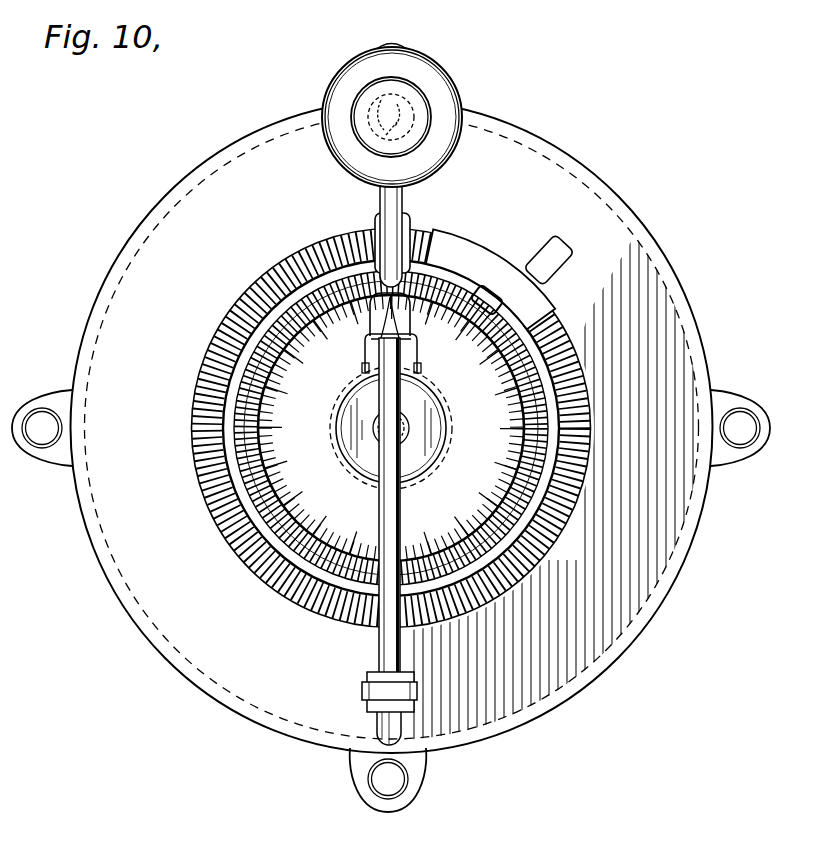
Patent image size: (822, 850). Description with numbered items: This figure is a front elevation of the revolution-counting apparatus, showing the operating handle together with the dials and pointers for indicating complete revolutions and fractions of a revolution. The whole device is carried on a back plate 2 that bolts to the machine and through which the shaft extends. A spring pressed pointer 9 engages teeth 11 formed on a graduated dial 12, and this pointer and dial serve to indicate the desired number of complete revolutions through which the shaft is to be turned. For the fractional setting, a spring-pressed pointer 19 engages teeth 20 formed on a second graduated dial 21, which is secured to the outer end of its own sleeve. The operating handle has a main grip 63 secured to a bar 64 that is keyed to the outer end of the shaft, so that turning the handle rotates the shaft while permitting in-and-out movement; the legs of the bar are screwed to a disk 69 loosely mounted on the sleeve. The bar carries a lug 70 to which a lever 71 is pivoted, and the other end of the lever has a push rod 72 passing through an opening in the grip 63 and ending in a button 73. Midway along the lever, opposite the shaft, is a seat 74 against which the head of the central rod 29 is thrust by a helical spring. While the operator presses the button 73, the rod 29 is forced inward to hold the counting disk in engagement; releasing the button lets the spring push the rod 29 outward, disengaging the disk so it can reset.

The back plate 2 is at (417, 767).
The spring pressed pointer 9 is at (411, 224).
The teeth 11 is at (488, 247).
The graduated dial 12 is at (577, 361).
The spring-pressed pointer 19 is at (568, 266).
The teeth 20 is at (357, 233).
The graduated dial 21 is at (279, 566).
The rod 29 is at (447, 432).
The main grip 63 is at (419, 66).
The bar 64 is at (401, 505).
The disk 69 is at (392, 427).
The lug 70 is at (416, 698).
The lever 71 is at (410, 197).
The push rod 72 is at (362, 145).
The button 73 is at (412, 104).
The seat 74 is at (379, 436).